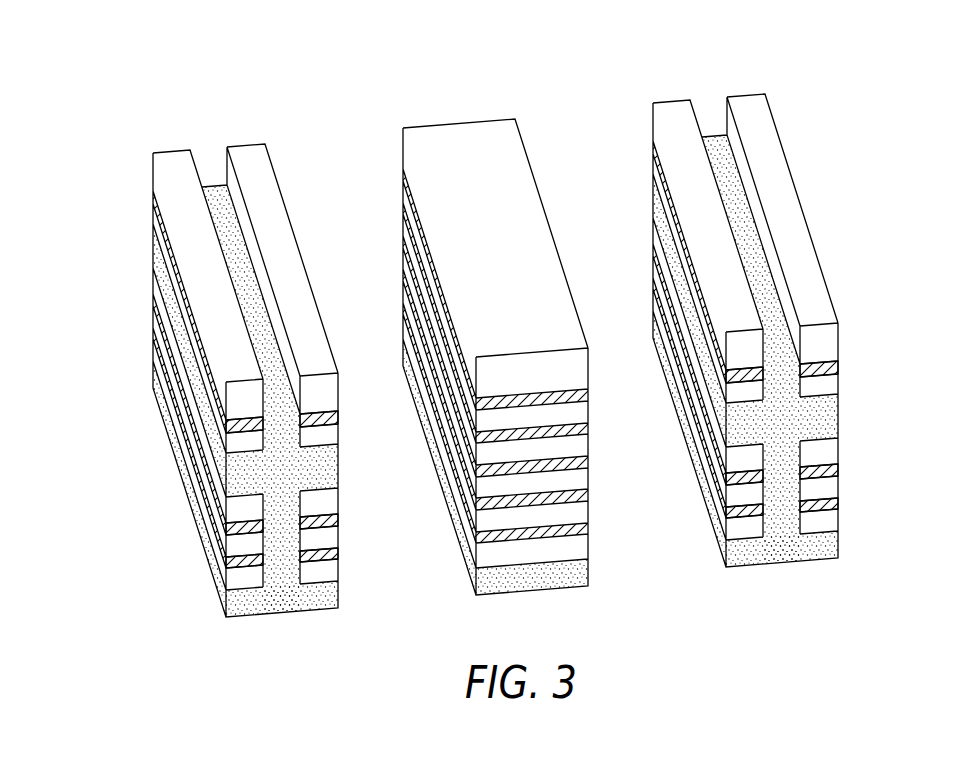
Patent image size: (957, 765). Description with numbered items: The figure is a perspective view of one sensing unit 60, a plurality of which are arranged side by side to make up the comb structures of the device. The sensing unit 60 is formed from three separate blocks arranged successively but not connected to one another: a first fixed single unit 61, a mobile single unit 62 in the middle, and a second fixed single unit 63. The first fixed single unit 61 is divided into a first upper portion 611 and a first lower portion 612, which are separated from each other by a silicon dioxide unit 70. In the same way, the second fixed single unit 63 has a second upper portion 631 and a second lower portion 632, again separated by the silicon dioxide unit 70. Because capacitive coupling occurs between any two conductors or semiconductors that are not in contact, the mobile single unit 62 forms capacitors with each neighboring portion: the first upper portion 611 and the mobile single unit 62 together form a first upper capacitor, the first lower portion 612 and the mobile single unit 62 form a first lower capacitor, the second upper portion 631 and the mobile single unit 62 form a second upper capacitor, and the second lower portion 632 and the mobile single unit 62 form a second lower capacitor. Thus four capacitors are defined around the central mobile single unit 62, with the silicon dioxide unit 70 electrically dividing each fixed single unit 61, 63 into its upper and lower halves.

The sensing unit 60 is at (939, 48).
The first fixed single unit 61 is at (281, 137).
The first upper portion 611 is at (346, 368).
The first lower portion 612 is at (346, 490).
The mobile single unit 62 is at (530, 108).
The second fixed single unit 63 is at (780, 81).
The second upper portion 631 is at (645, 102).
The second lower portion 632 is at (645, 220).
The silicon dioxide unit 70 is at (313, 467).